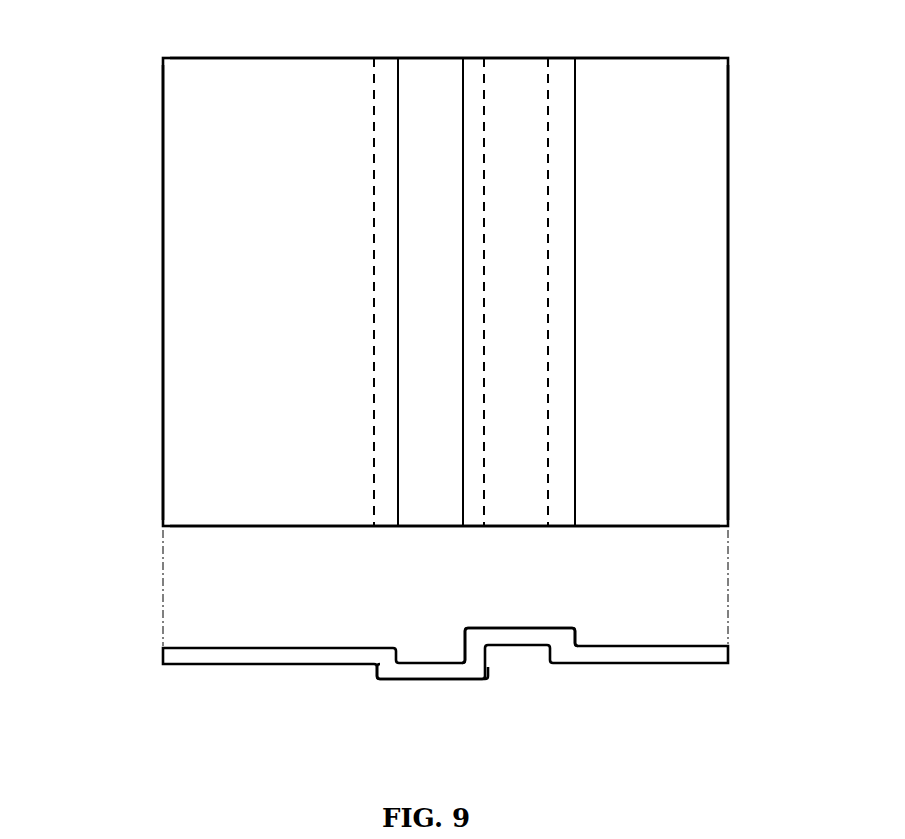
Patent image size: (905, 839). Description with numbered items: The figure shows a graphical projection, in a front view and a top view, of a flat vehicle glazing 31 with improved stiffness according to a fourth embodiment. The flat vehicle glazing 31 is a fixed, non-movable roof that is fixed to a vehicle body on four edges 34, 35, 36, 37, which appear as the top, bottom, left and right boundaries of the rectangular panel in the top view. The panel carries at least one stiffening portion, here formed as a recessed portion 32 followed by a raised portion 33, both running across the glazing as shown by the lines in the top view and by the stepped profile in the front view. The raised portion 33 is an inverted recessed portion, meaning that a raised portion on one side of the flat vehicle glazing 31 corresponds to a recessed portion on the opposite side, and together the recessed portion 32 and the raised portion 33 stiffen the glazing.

The flat vehicle glazing 31 is at (124, 49).
The recessed portion 32 is at (431, 682).
The raised portion 33 is at (517, 628).
The edge 34 is at (632, 58).
The edge 35 is at (600, 527).
The edge 36 is at (163, 430).
The edge 37 is at (728, 163).